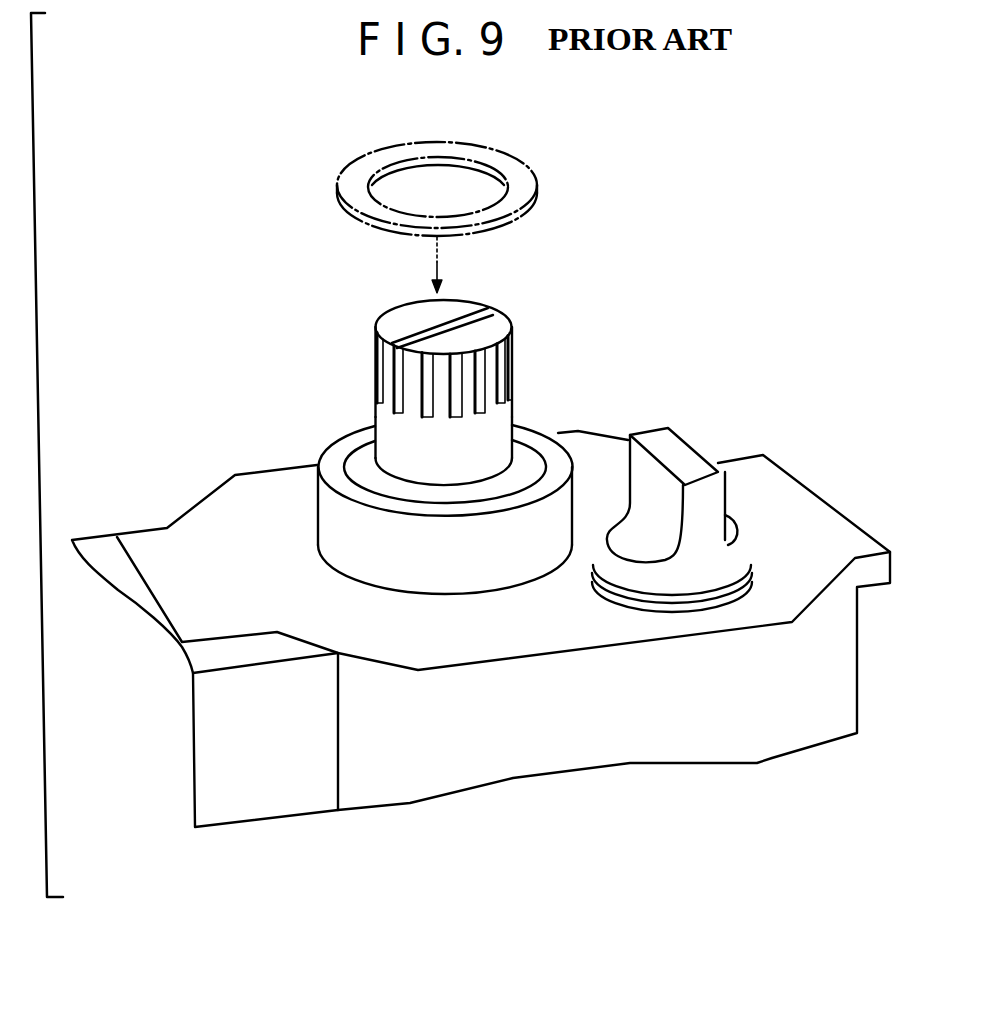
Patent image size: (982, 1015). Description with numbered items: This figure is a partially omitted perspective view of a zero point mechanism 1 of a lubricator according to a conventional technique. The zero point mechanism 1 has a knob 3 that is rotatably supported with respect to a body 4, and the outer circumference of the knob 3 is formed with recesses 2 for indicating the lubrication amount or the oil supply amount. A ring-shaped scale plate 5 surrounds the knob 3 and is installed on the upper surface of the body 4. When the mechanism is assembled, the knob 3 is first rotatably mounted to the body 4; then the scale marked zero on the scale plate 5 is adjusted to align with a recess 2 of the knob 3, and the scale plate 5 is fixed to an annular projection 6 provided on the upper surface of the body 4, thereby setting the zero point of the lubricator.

The zero point mechanism 1 is at (426, 560).
The recess 2 is at (395, 378).
The knob 3 is at (497, 424).
The body 4 is at (497, 651).
The scale plate 5 is at (478, 146).
The annular projection 6 is at (432, 560).